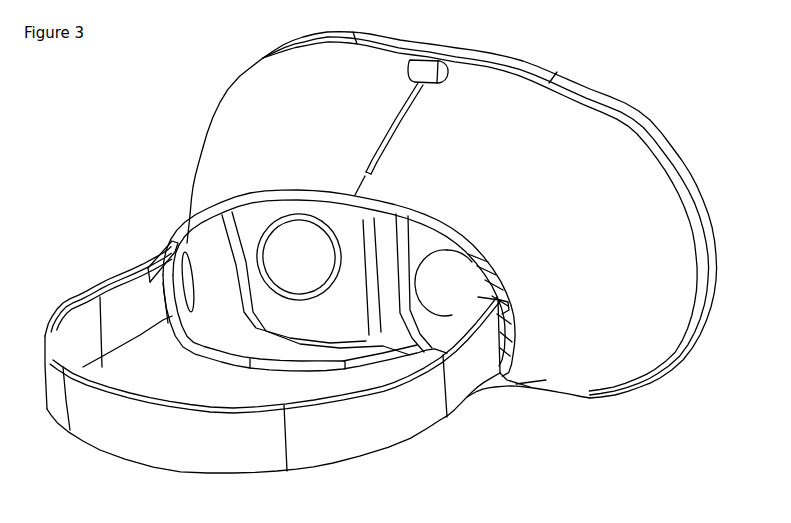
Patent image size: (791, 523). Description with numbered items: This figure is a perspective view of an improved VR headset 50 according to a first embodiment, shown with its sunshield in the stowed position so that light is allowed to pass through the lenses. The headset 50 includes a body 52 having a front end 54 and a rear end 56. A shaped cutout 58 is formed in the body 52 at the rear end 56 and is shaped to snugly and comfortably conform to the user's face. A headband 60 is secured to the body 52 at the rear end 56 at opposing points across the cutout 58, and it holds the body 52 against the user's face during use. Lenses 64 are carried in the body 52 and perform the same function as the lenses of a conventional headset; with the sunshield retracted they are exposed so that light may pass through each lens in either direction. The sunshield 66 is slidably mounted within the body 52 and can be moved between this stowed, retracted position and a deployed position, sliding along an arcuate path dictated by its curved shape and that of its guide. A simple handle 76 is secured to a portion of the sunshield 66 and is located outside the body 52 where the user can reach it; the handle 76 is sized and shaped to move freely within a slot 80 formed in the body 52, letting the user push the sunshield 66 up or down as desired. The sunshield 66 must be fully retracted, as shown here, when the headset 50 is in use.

The VR headset 50 is at (709, 98).
The body 52 is at (597, 333).
The front end 54 is at (514, 64).
The rear end 56 is at (199, 190).
The shaped cutout 58 is at (381, 196).
The headband 60 is at (420, 420).
The lenses 64 is at (290, 238).
The sunshield 66 is at (340, 210).
The handle 76 is at (407, 70).
The slot 80 is at (410, 98).